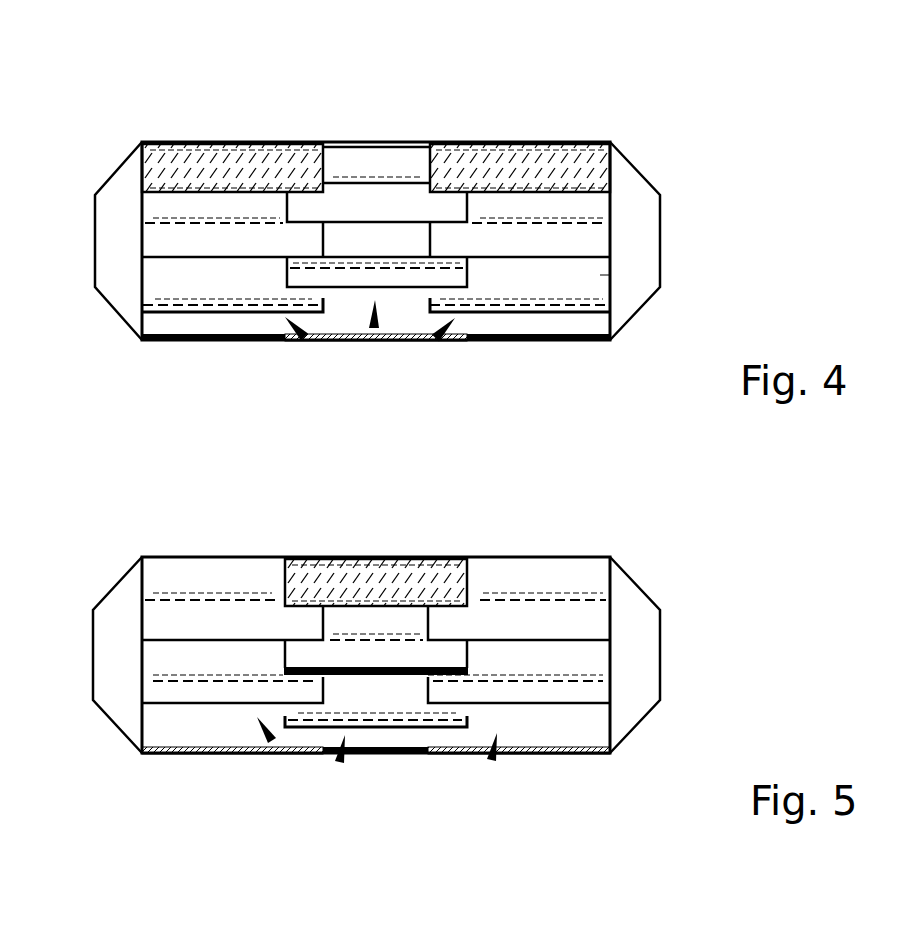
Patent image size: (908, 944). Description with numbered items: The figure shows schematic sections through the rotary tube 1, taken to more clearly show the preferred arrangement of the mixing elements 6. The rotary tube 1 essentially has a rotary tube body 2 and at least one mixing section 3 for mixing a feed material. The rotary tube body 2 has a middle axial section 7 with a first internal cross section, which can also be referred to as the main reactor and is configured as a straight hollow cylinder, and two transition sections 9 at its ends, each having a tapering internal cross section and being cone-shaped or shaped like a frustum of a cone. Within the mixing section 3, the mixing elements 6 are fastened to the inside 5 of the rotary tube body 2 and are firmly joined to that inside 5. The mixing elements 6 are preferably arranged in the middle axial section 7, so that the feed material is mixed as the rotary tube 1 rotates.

In FIG. 4, the rotary tube 1 is at (90, 123).
In FIG. 5, the rotary tube 1 is at (92, 537).
In FIG. 4, the rotary tube body 2 is at (625, 157).
In FIG. 5, the rotary tube body 2 is at (623, 567).
In FIG. 4, the mixing section 3 is at (285, 317).
In FIG. 5, the mixing section 3 is at (257, 717).
In FIG. 4, the inside 5 is at (378, 147).
In FIG. 5, the inside 5 is at (490, 559).
In FIG. 4, the mixing element 6 is at (347, 200).
In FIG. 5, the mixing element 6 is at (237, 617).
In FIG. 4, the middle axial section 7 is at (203, 343).
In FIG. 5, the middle axial section 7 is at (373, 757).
In FIG. 4, the transition section 9 is at (118, 314).
In FIG. 5, the transition section 9 is at (118, 727).